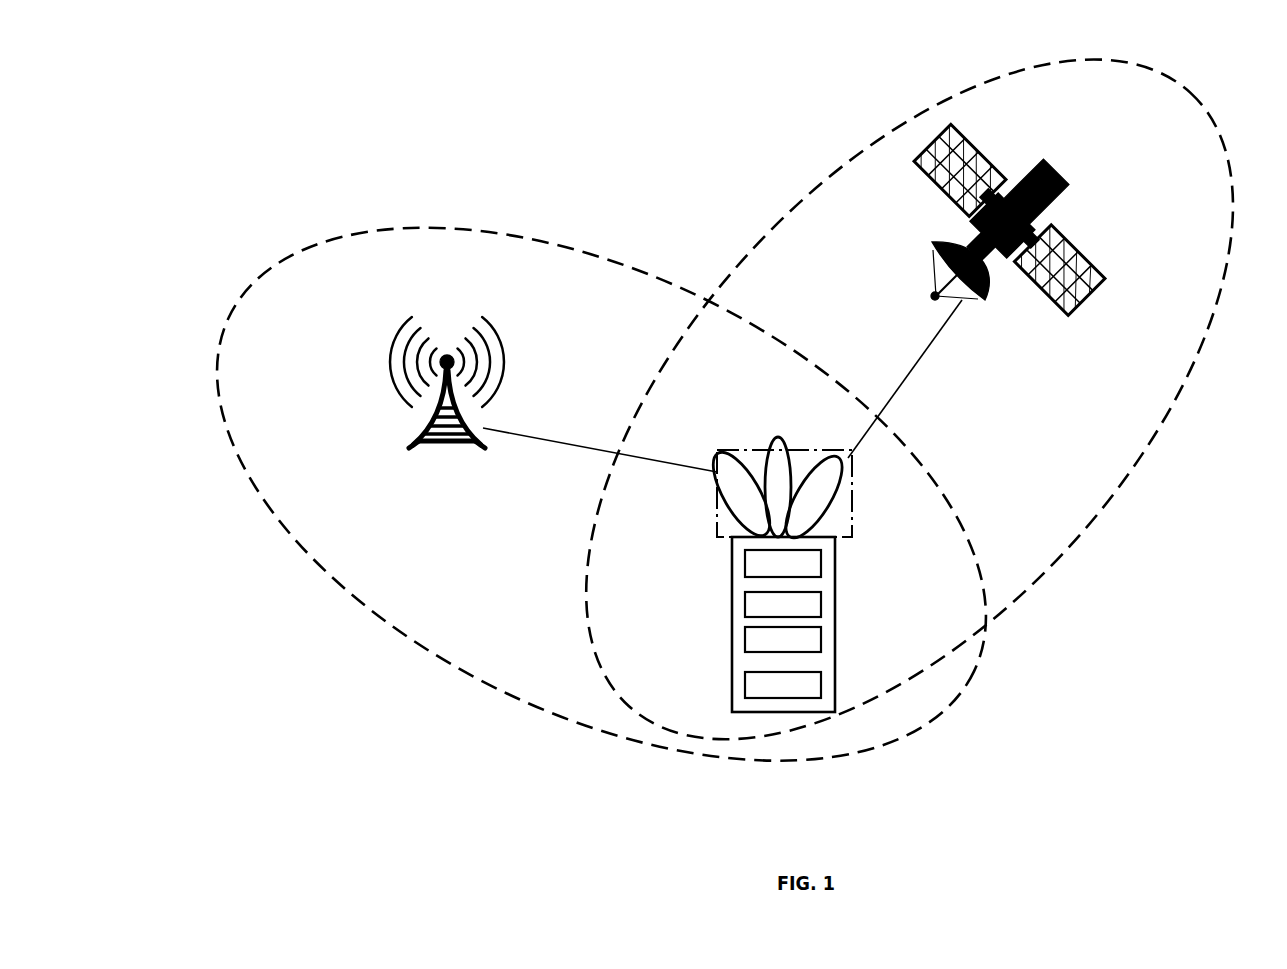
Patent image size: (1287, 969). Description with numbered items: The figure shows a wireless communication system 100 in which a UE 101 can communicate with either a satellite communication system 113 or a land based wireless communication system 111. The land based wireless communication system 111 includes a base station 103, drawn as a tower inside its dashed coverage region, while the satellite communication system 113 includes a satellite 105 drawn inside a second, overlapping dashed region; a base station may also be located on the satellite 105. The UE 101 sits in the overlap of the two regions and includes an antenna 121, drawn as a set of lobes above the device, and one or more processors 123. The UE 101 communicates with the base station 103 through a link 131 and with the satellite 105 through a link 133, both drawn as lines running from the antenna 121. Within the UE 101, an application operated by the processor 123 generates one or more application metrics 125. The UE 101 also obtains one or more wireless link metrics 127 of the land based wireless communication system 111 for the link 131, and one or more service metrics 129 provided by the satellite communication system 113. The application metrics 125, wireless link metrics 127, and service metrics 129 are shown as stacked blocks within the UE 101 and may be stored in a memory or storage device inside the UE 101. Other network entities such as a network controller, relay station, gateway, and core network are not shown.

The wireless communication system 100 is at (196, 130).
The UE 101 is at (728, 624).
The base station 103 is at (420, 441).
The satellite 105 is at (1057, 171).
The land based wireless communication system 111 is at (217, 378).
The satellite communication system 113 is at (778, 222).
The antenna 121 is at (739, 450).
The processors 123 is at (783, 685).
The application metrics 125 is at (783, 640).
The wireless link metrics 127 is at (783, 605).
The service metrics 129 is at (783, 563).
The link 131 is at (557, 440).
The link 133 is at (890, 397).